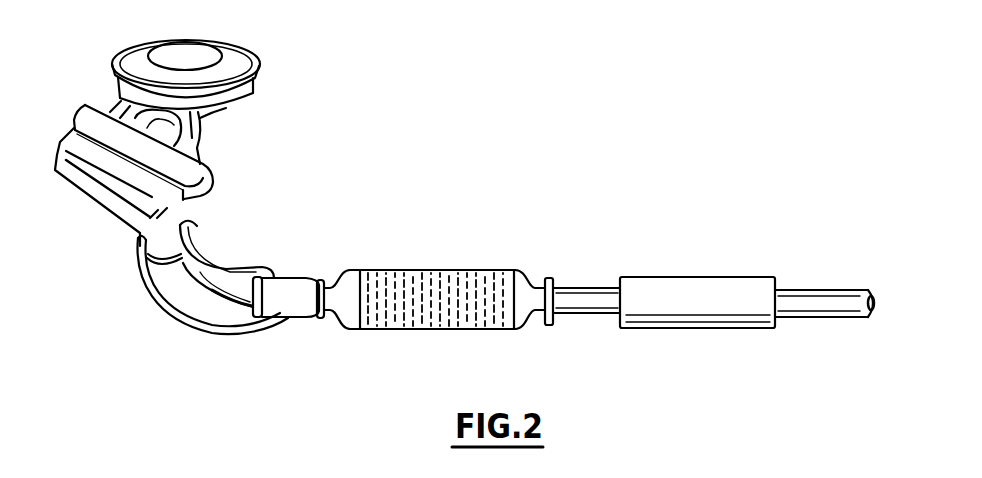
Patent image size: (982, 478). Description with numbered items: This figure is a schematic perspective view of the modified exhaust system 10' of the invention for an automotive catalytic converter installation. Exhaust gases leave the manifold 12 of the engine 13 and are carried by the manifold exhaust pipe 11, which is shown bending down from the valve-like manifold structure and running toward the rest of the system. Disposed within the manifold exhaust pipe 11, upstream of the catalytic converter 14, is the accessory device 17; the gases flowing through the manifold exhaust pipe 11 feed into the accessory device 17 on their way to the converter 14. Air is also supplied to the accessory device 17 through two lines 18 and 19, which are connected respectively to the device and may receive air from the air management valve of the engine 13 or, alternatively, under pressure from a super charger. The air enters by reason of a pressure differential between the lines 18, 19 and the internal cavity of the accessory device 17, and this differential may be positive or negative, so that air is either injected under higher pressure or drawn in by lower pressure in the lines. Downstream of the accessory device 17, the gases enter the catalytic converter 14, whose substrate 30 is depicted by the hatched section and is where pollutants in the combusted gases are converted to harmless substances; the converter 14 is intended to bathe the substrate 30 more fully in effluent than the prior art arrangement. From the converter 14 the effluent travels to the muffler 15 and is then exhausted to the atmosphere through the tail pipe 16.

The modified exhaust system 10' is at (644, 139).
The manifold exhaust pipe 11 is at (193, 278).
The manifold 12 is at (113, 206).
The engine 13 is at (195, 172).
The catalytic converter 14 is at (473, 270).
The muffler 15 is at (720, 272).
The tail pipe 16 is at (840, 288).
The accessory device 17 is at (292, 282).
The air line 18 is at (262, 262).
The air line 19 is at (220, 332).
The substrate 30 is at (410, 329).